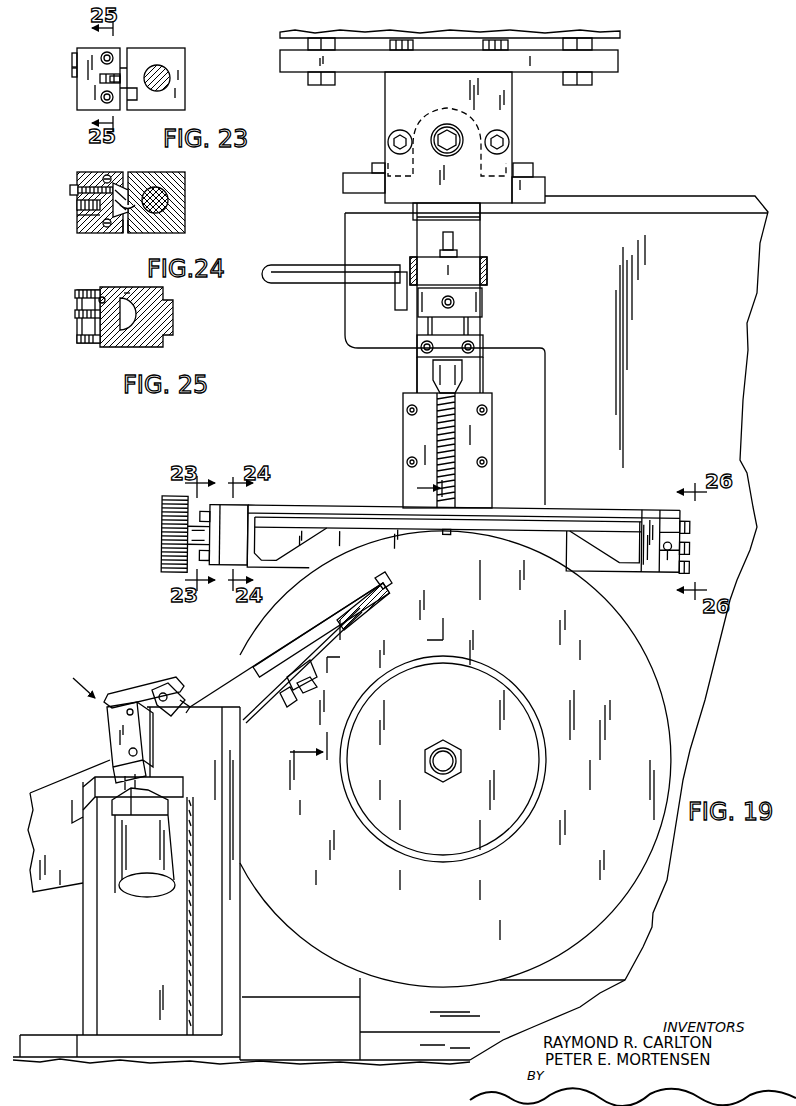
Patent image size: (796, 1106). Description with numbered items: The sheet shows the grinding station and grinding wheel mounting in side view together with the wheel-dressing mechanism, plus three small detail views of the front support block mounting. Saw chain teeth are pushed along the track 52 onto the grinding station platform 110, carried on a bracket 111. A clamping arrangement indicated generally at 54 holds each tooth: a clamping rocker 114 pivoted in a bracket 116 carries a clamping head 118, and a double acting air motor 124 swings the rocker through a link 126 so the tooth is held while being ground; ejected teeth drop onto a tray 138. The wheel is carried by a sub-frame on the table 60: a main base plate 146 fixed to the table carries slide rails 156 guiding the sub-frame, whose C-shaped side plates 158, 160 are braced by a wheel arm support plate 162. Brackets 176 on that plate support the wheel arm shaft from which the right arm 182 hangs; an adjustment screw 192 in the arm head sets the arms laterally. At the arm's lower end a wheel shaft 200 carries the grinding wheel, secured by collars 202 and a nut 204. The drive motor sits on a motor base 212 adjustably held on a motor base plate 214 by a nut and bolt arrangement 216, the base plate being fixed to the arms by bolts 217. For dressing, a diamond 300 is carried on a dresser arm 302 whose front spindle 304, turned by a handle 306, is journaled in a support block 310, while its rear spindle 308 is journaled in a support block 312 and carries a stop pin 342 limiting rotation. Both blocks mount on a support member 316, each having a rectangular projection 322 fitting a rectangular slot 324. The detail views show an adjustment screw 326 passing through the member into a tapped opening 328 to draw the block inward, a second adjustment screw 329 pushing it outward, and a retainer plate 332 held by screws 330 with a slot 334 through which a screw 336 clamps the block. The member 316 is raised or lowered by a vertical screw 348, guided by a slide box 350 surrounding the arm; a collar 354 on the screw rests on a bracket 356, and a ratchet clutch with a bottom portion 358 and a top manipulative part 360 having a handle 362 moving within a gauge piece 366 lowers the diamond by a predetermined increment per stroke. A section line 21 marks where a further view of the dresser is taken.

In FIG. 19, the section line 21 is at (365, 614).
In FIG. 19, the track 52 is at (348, 645).
In FIG. 19, the pivot head assembly 54 is at (71, 683).
In FIG. 19, the table 60 is at (327, 1067).
In FIG. 19, the grinding station platform 110 is at (253, 710).
In FIG. 19, the bracket 111 is at (90, 965).
In FIG. 19, the clamping rocker 114 is at (157, 690).
In FIG. 19, the bracket 116 is at (177, 682).
In FIG. 19, the clamping head 118 is at (190, 703).
In FIG. 19, the double acting air motor 124 is at (132, 892).
In FIG. 19, the link 126 is at (115, 735).
In FIG. 19, the tray 138 is at (55, 880).
In FIG. 19, the main base plate 146 is at (370, 1044).
In FIG. 19, the slide rails 156 is at (567, 990).
In FIG. 19, the side plate 158 is at (643, 947).
In FIG. 19, the side plate 160 is at (353, 333).
In FIG. 19, the wheel arm support plate 162 is at (630, 203).
In FIG. 19, the brackets 176 is at (545, 178).
In FIG. 19, the right arm 182 is at (472, 245).
In FIG. 19, the adjustment screw 192 is at (445, 130).
In FIG. 19, the wheel shaft 200 is at (428, 777).
In FIG. 19, the collars 202 is at (457, 680).
In FIG. 19, the nut 204 is at (427, 762).
In FIG. 19, the motor base 212 is at (618, 33).
In FIG. 19, the motor base plate 214 is at (618, 65).
In FIG. 19, the nut and bolt arrangement 216 is at (323, 82).
In FIG. 19, the bolts 217 is at (413, 43).
In FIG. 19, the diamond 300 is at (445, 533).
In FIG. 19, the dresser arm 302 is at (620, 517).
In FIG. 23, the spindle 304 is at (172, 80).
In FIG. 24, the spindle 304 is at (182, 198).
In FIG. 19, the spindle 304 is at (197, 535).
In FIG. 19, the handle 306 is at (162, 503).
In FIG. 19, the rear spindle 308 is at (650, 543).
In FIG. 23, the support block 310 is at (178, 58).
In FIG. 24, the support block 310 is at (185, 178).
In FIG. 19, the support block 310 is at (240, 510).
In FIG. 19, the support block 312 is at (655, 515).
In FIG. 24, the support member 316 is at (77, 172).
In FIG. 25, the support member 316 is at (168, 315).
In FIG. 19, the support member 316 is at (367, 538).
In FIG. 23, the rectangular projection 322 is at (141, 90).
In FIG. 24, the rectangular projection 322 is at (127, 230).
In FIG. 24, the rectangular slot 324 is at (80, 205).
In FIG. 25, the rectangular slot 324 is at (127, 297).
In FIG. 23, the adjustment screw 326 is at (72, 54).
In FIG. 24, the adjustment screw 326 is at (70, 190).
In FIG. 25, the adjustment screw 326 is at (103, 293).
In FIG. 24, the tapped opening 328 is at (115, 183).
In FIG. 24, the second adjustment screw 329 is at (78, 215).
In FIG. 23, the screws 330 is at (110, 54).
In FIG. 24, the screws 330 is at (107, 176).
In FIG. 25, the screws 330 is at (78, 293).
In FIG. 23, the retainer plate 332 is at (87, 105).
In FIG. 25, the retainer plate 332 is at (85, 347).
In FIG. 19, the retainer plate 332 is at (503, 118).
In FIG. 23, the slot 334 is at (100, 85).
In FIG. 25, the slot 334 is at (80, 333).
In FIG. 23, the screw 336 is at (100, 78).
In FIG. 24, the screw 336 is at (127, 197).
In FIG. 25, the screw 336 is at (75, 314).
In FIG. 19, the stop pin 342 is at (687, 548).
In FIG. 19, the vertical screw 348 is at (448, 477).
In FIG. 19, the slide box 350 is at (487, 432).
In FIG. 19, the collar 354 is at (467, 325).
In FIG. 19, the bracket 356 is at (478, 340).
In FIG. 19, the bottom portion 358 is at (482, 290).
In FIG. 19, the top manipulative part 360 is at (487, 270).
In FIG. 19, the handle 362 is at (305, 277).
In FIG. 19, the gauge piece 366 is at (400, 307).